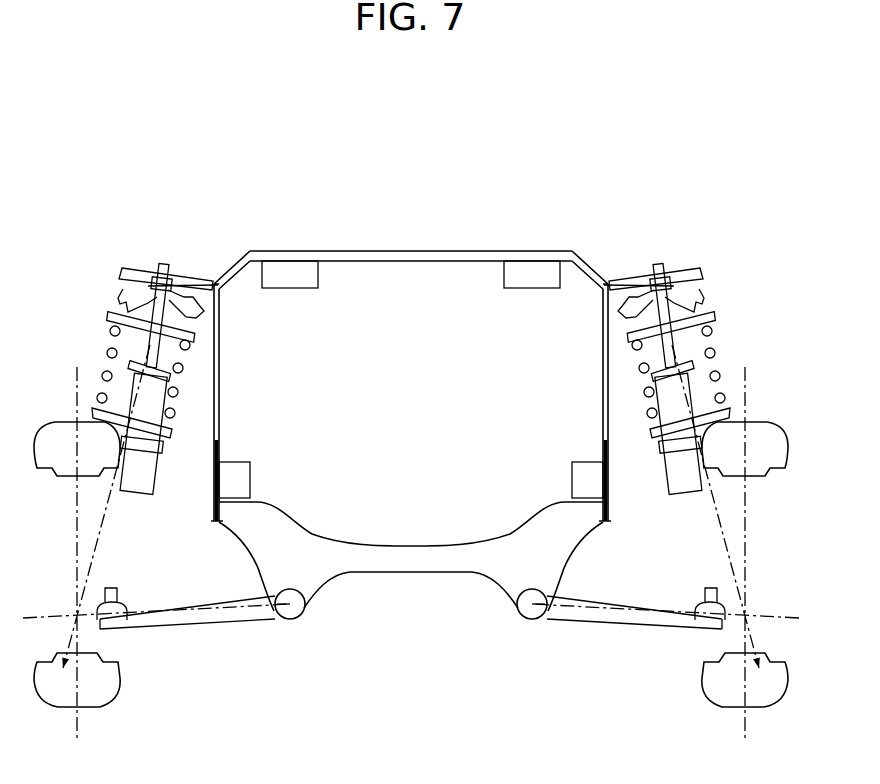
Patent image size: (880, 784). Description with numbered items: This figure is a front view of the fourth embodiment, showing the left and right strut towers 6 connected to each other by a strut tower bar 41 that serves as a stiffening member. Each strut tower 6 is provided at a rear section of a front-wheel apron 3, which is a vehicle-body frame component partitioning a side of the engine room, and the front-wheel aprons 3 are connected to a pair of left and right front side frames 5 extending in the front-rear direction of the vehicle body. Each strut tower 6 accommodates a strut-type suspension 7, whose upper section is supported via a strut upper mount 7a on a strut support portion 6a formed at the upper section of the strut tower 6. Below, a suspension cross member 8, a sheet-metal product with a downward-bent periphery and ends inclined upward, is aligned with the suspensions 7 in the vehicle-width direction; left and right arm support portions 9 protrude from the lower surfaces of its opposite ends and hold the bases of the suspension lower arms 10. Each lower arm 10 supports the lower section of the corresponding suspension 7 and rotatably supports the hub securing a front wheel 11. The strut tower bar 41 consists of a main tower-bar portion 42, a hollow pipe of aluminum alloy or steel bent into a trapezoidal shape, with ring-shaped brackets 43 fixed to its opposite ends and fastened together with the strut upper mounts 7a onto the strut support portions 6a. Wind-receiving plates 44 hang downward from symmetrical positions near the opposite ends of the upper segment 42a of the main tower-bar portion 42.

The front-wheel apron 3 is at (192, 428).
The front side frame 5 is at (251, 441).
The strut tower 6 is at (240, 327).
The strut support portion 6a is at (110, 254).
The strut-type suspension 7 is at (412, 359).
The strut upper mount 7a is at (84, 262).
The suspension cross member 8 is at (412, 573).
The arm support portion 9 is at (290, 641).
The suspension lower arm 10 is at (195, 646).
The front wheel 11 is at (53, 733).
The strut tower bar 41 is at (412, 346).
The main tower-bar portion 42 is at (229, 268).
The upper segment 42a is at (412, 249).
The ring-shaped bracket 43 is at (159, 247).
The wind-receiving plate 44 is at (291, 310).